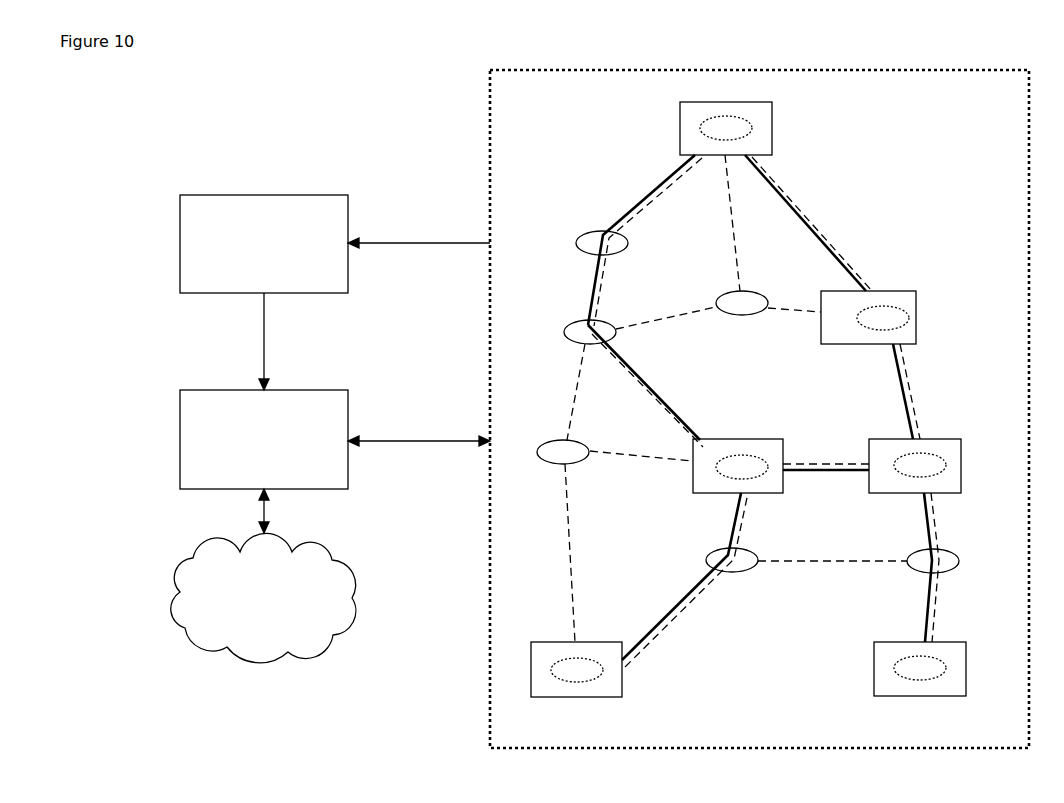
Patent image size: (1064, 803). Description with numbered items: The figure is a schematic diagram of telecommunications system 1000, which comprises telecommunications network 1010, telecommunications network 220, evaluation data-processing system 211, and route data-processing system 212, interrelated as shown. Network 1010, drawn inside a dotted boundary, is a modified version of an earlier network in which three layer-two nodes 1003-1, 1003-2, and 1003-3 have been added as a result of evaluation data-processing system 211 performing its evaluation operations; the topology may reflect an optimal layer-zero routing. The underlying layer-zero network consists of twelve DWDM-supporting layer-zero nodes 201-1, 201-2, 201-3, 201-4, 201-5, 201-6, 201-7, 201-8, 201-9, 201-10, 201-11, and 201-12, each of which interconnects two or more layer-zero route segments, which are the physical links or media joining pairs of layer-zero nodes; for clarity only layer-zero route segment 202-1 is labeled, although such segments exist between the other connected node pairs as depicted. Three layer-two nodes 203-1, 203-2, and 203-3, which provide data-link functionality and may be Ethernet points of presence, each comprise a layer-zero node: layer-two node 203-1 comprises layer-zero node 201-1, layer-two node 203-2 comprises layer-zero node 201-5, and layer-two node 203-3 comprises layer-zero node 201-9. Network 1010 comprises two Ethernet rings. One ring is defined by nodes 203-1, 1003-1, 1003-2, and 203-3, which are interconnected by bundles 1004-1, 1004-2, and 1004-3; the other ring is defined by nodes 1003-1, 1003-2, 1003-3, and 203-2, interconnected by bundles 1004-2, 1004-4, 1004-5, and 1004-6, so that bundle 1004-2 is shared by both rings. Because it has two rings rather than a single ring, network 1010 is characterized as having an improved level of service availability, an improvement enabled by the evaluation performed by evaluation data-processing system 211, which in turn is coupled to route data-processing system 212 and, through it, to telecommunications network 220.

The telecommunications system 1000 is at (230, 88).
The telecommunications network 1010 is at (722, 409).
The evaluation data-processing system 211 is at (264, 244).
The route data-processing system 212 is at (264, 439).
The telecommunications network 220 is at (263, 597).
The layer-0 node 201-1 is at (549, 646).
The layer-0 node 201-2 is at (598, 439).
The layer-0 node 201-3 is at (624, 319).
The layer-0 node 201-4 is at (571, 230).
The layer-0 node 201-5 is at (680, 136).
The layer-0 node 201-6 is at (919, 301).
The layer-0 node 201-7 is at (950, 441).
The layer-0 node 201-8 is at (899, 538).
The layer-0 node 201-9 is at (893, 645).
The layer-0 node 201-10 is at (694, 546).
The layer-0 node 201-11 is at (780, 448).
The layer-0 node 201-12 is at (778, 292).
The layer-0 route segment 202-1 is at (641, 471).
The layer-2 node 203-1 is at (596, 647).
The layer-2 node 203-2 is at (766, 128).
The layer-2 node 203-3 is at (878, 669).
The layer-2 node 1003-1 is at (768, 489).
The layer-2 node 1003-2 is at (948, 489).
The layer-2 node 1003-3 is at (897, 293).
The bundle 1004-1 is at (683, 580).
The bundle 1004-2 is at (828, 480).
The bundle 1004-3 is at (890, 567).
The bundle 1004-4 is at (635, 240).
The bundle 1004-5 is at (805, 223).
The bundle 1004-6 is at (866, 391).